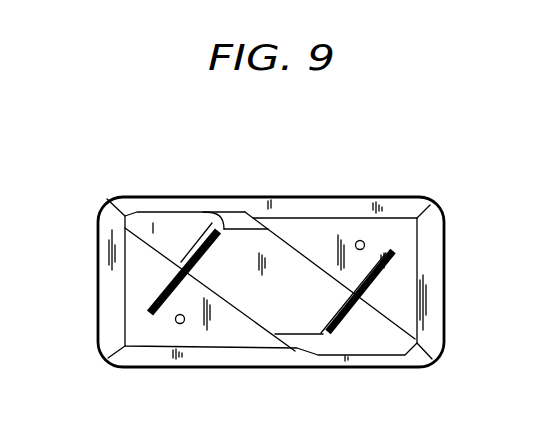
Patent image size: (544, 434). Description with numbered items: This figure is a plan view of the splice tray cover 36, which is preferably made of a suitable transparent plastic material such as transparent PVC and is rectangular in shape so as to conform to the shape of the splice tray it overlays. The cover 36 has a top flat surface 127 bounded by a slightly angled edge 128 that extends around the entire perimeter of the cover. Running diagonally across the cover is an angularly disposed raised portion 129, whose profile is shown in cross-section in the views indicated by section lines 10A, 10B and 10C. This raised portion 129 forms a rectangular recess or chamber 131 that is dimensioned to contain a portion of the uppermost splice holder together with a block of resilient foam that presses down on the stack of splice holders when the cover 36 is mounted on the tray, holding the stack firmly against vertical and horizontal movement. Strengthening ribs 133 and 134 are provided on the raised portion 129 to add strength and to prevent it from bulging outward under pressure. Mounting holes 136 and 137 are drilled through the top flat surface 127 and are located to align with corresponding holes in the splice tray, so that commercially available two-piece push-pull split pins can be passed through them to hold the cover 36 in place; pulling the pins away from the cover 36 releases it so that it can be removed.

The section line 10A is at (247, 193).
The section line 10B is at (337, 193).
The section line 10C is at (100, 194).
The splice tray cover 36 is at (430, 267).
The top flat surface 127 is at (137, 332).
The slightly angled edge 128 is at (110, 237).
The angularly disposed raised portion 129 is at (253, 322).
The rectangular recess or chamber 131 is at (302, 320).
The strengthening rib 133 is at (157, 293).
The strengthening rib 134 is at (398, 253).
The mounting hole 136 is at (177, 323).
The mounting hole 137 is at (356, 241).